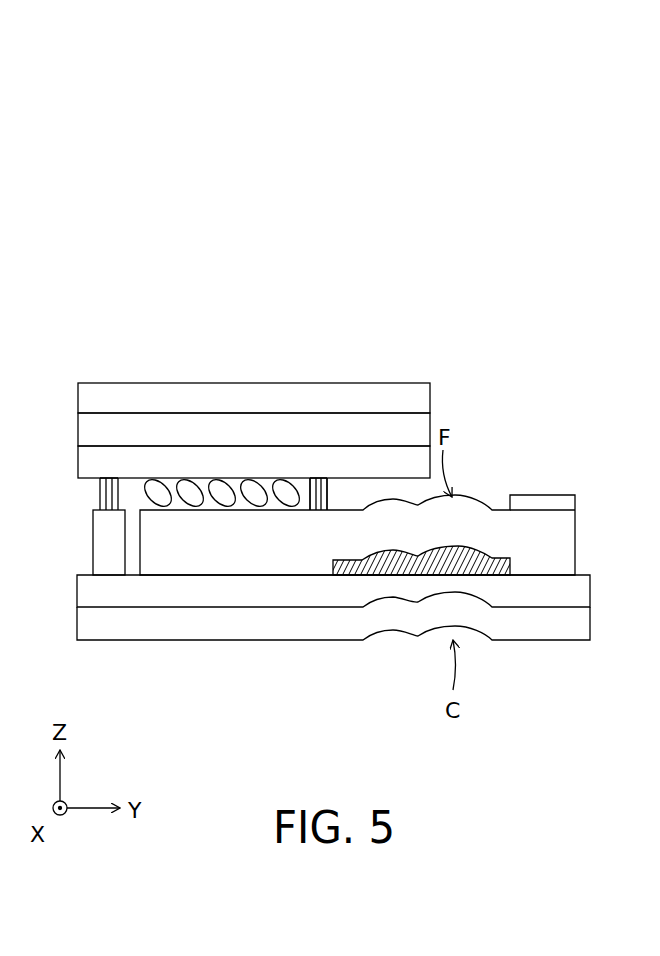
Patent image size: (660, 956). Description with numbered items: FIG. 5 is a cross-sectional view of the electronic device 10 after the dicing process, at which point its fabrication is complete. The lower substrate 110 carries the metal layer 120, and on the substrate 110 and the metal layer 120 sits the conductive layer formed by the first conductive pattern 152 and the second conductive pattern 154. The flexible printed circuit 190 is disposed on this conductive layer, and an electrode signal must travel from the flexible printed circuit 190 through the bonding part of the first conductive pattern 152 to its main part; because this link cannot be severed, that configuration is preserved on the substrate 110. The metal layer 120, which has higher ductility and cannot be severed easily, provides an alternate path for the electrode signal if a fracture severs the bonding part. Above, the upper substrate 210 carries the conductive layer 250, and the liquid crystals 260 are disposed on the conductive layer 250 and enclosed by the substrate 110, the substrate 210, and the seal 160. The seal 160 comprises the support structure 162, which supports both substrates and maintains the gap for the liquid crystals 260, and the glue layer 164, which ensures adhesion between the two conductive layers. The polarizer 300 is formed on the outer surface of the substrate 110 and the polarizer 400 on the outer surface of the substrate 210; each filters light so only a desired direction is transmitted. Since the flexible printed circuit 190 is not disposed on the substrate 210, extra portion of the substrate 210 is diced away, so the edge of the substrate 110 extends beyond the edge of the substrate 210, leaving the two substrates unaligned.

The electronic device 10 is at (80, 108).
The polarizer 400 is at (85, 399).
The substrate 210 is at (85, 431).
The conductive layer 250 is at (85, 464).
The liquid crystals 260 is at (302, 475).
The seal 160 is at (590, 48).
The support structure 162 is at (314, 511).
The glue layer 164 is at (102, 487).
The first conductive pattern 152 is at (232, 558).
The second conductive pattern 154 is at (110, 562).
The flexible printed circuit 190 is at (568, 500).
The substrate 110 is at (590, 589).
The polarizer 300 is at (590, 622).
The metal layer 120 is at (347, 568).